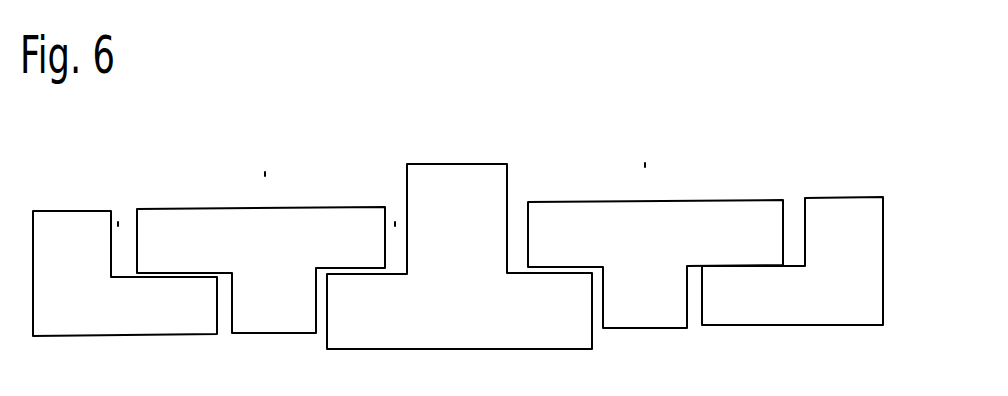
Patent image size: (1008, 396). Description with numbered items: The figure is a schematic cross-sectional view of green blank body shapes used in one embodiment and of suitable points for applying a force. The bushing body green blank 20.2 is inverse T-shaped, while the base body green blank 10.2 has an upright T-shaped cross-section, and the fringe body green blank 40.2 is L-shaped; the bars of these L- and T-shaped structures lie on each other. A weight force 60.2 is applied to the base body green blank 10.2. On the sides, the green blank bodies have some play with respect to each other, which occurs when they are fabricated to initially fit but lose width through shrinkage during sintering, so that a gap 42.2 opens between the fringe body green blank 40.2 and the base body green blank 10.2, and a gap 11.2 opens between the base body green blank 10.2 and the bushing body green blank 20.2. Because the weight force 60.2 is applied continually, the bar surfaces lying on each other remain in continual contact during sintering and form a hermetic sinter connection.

The base body green blank 10.2 is at (210, 210).
The gap 11.2 is at (395, 222).
The bushing body green blank 20.2 is at (460, 164).
The fringe body green blank 40.2 is at (78, 210).
The gap 42.2 is at (118, 223).
The weight force 60.2 is at (265, 172).